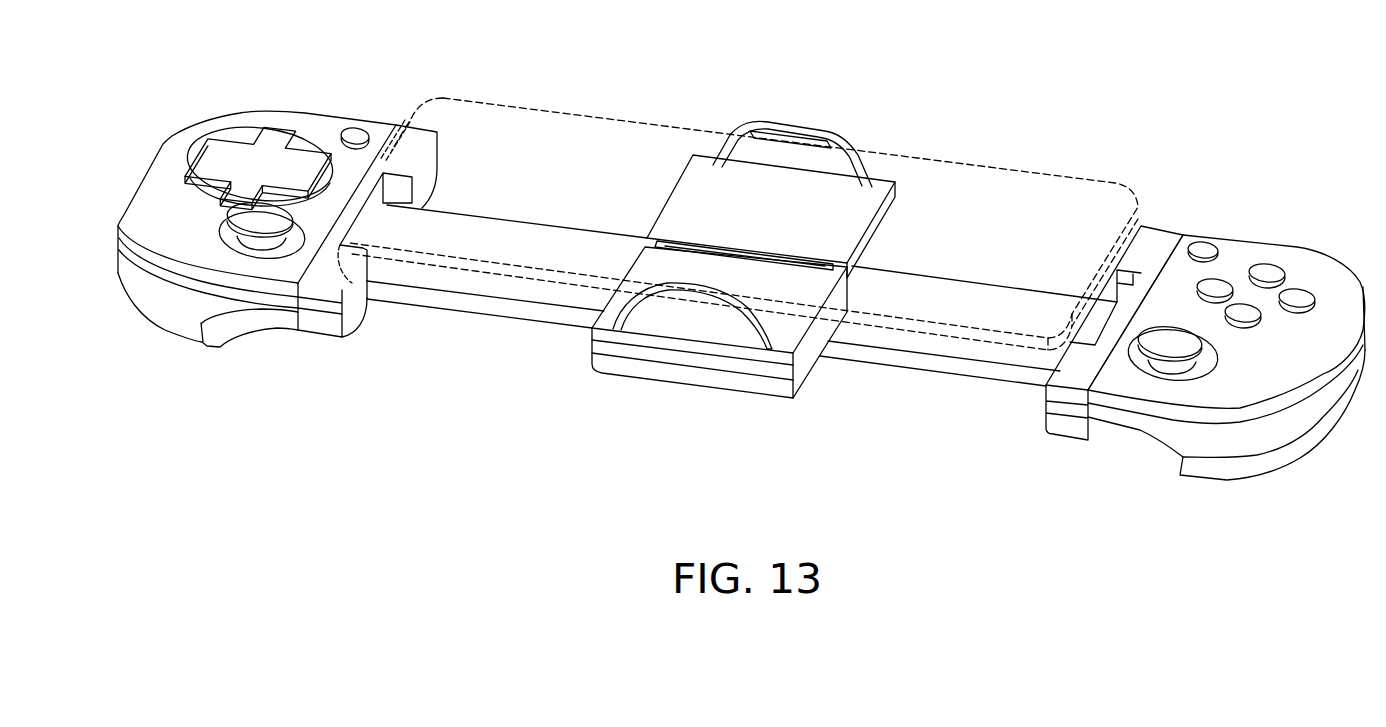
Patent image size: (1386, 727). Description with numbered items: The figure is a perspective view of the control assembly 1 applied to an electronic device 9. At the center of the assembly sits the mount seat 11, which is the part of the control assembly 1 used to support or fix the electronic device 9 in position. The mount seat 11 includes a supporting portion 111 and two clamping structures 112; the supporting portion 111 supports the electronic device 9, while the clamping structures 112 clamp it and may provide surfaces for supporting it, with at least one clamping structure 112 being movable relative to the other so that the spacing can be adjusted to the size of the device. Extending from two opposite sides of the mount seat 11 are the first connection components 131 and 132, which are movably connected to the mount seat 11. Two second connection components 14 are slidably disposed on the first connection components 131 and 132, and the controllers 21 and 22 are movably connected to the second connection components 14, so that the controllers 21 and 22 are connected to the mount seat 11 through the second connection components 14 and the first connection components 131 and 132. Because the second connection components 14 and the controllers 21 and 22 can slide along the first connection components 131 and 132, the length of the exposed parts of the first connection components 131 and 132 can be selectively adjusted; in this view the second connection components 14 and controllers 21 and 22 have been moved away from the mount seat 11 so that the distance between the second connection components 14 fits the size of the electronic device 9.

The control assembly 1 is at (112, 190).
The electronic device 9 is at (1000, 185).
The mount seat 11 is at (823, 118).
The second connection components 14 is at (407, 120).
The controller 21 is at (304, 106).
The controller 22 is at (1262, 237).
The supporting portion 111 is at (750, 380).
The clamping structures 112 is at (788, 130).
The first connection component 131 is at (478, 300).
The first connection component 132 is at (940, 362).